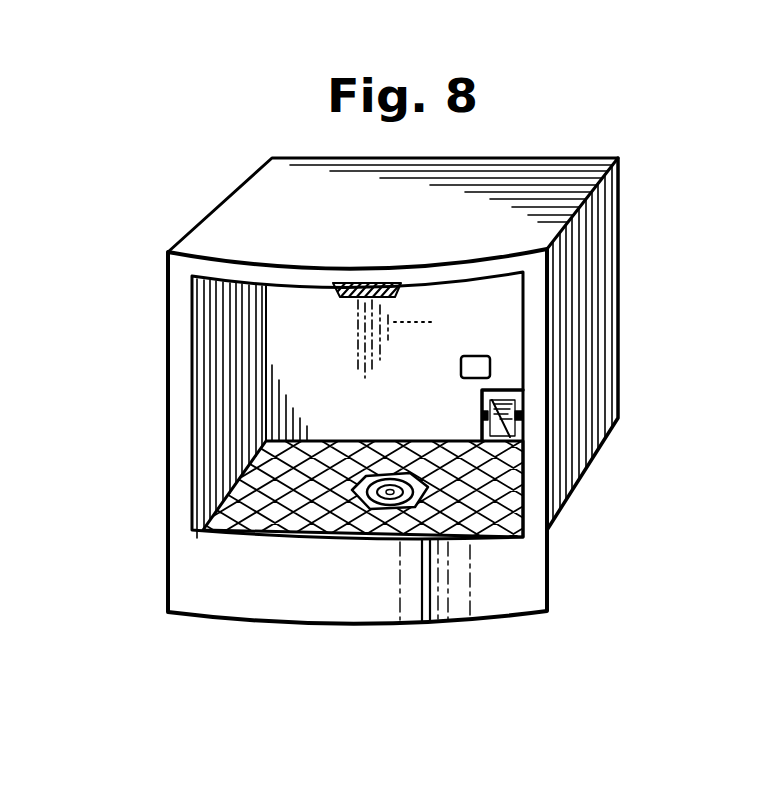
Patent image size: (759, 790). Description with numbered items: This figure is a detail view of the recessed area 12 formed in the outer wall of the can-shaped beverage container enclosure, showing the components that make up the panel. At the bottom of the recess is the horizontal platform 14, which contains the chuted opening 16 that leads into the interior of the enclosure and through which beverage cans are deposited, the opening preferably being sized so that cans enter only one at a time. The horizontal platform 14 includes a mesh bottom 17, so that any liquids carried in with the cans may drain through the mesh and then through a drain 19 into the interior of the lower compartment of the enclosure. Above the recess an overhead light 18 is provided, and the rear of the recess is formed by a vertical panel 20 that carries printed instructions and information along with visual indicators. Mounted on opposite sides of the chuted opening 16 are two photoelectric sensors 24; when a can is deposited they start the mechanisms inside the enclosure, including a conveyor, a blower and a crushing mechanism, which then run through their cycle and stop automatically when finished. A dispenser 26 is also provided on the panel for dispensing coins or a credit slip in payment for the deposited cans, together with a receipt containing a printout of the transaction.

The recessed area 12 is at (590, 300).
The horizontal platform 14 is at (284, 514).
The chuted opening 16 is at (503, 405).
The mesh bottom 17 is at (490, 518).
The overhead light 18 is at (371, 290).
The drain 19 is at (393, 497).
The vertical panel 20 is at (287, 348).
The photoelectric sensors 24 is at (523, 418).
The dispenser 26 is at (489, 366).